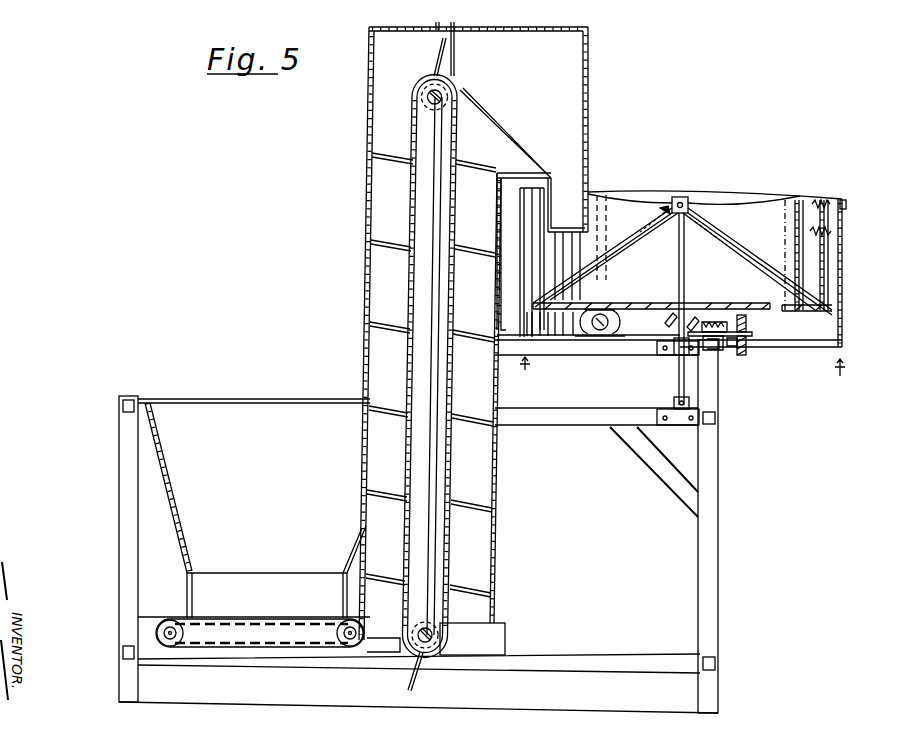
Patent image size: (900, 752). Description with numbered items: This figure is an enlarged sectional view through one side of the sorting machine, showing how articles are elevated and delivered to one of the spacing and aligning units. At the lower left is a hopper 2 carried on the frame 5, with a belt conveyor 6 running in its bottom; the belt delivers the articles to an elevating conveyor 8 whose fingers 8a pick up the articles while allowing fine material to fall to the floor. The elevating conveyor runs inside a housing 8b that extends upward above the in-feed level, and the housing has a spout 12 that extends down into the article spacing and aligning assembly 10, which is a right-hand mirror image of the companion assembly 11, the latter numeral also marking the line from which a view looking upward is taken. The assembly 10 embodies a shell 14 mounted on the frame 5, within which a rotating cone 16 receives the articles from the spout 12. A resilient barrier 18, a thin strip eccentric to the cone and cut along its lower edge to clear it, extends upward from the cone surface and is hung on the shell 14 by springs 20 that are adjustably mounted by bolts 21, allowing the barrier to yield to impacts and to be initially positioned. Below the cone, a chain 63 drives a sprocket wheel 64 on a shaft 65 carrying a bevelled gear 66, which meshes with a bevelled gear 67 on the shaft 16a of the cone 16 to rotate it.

The hopper 2 is at (262, 408).
The frame 5 is at (126, 448).
The belt conveyor 6 is at (284, 627).
The elevating conveyor 8 is at (414, 153).
The fingers 8a is at (396, 160).
The housing 8b is at (368, 100).
The article spacing and aligning assembly 10 is at (762, 192).
The article spacing and aligning assembly 11 is at (681, 378).
The spout 12 is at (588, 108).
The shell 14 is at (844, 272).
The rotating cone 16 is at (668, 206).
The shaft 16a is at (677, 385).
The resilient barrier 18 is at (802, 247).
The springs 20 is at (822, 229).
The bolts 21 is at (847, 204).
The chain 63 is at (743, 356).
The sprocket wheel 64 is at (749, 324).
The shaft 65 is at (752, 336).
The bevelled gear 66 is at (695, 322).
The bevelled gear 67 is at (665, 321).